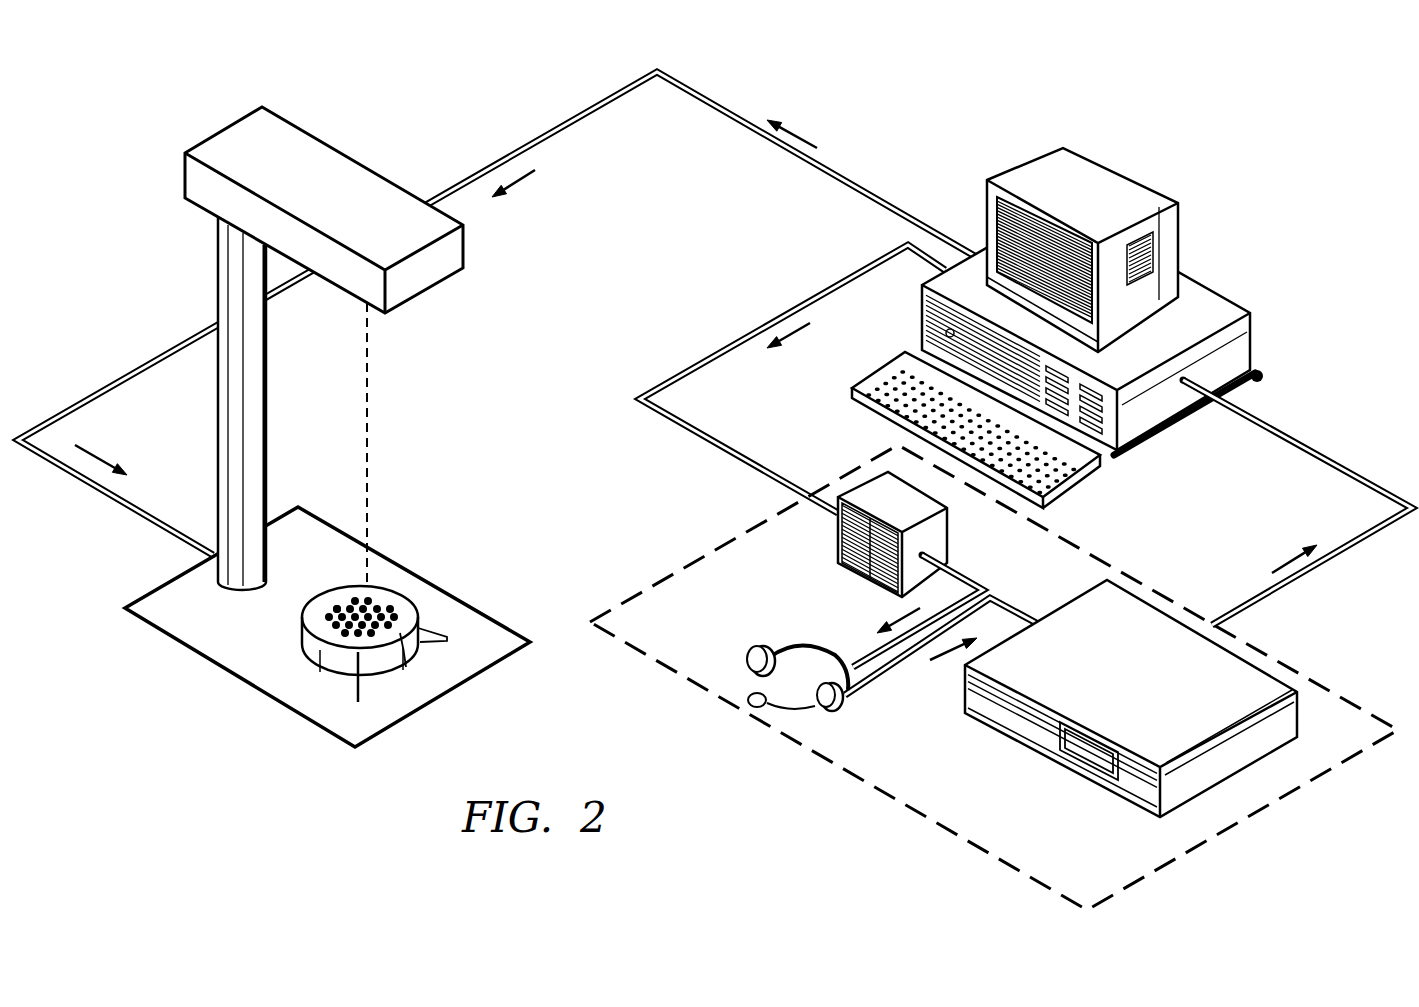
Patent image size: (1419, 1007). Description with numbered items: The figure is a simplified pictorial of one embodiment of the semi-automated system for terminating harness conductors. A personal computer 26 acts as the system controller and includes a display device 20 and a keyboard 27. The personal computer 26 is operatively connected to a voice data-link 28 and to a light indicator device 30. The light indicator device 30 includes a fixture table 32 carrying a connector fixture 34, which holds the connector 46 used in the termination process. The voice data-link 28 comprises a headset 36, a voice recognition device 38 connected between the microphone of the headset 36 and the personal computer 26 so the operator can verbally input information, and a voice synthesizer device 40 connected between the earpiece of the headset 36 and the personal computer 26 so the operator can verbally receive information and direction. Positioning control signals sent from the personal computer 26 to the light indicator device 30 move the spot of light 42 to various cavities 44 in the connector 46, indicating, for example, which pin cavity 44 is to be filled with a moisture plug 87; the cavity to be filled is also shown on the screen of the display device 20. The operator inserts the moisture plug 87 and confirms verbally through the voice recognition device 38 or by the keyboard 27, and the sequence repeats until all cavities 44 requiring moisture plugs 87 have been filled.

The display device 20 is at (1097, 155).
The personal computer 26 is at (1220, 298).
The keyboard 27 is at (1103, 470).
The voice data-link 28 is at (984, 811).
The light indicator device 30 is at (443, 273).
The fixture table 32 is at (497, 628).
The connector fixture 34 is at (357, 687).
The headset 36 is at (807, 647).
The voice recognition device 38 is at (1298, 707).
The voice synthesizer device 40 is at (940, 527).
The spot of light 42 is at (368, 614).
The cavities 44 is at (337, 608).
The connector 46 is at (303, 648).
The moisture plug 87 is at (405, 640).